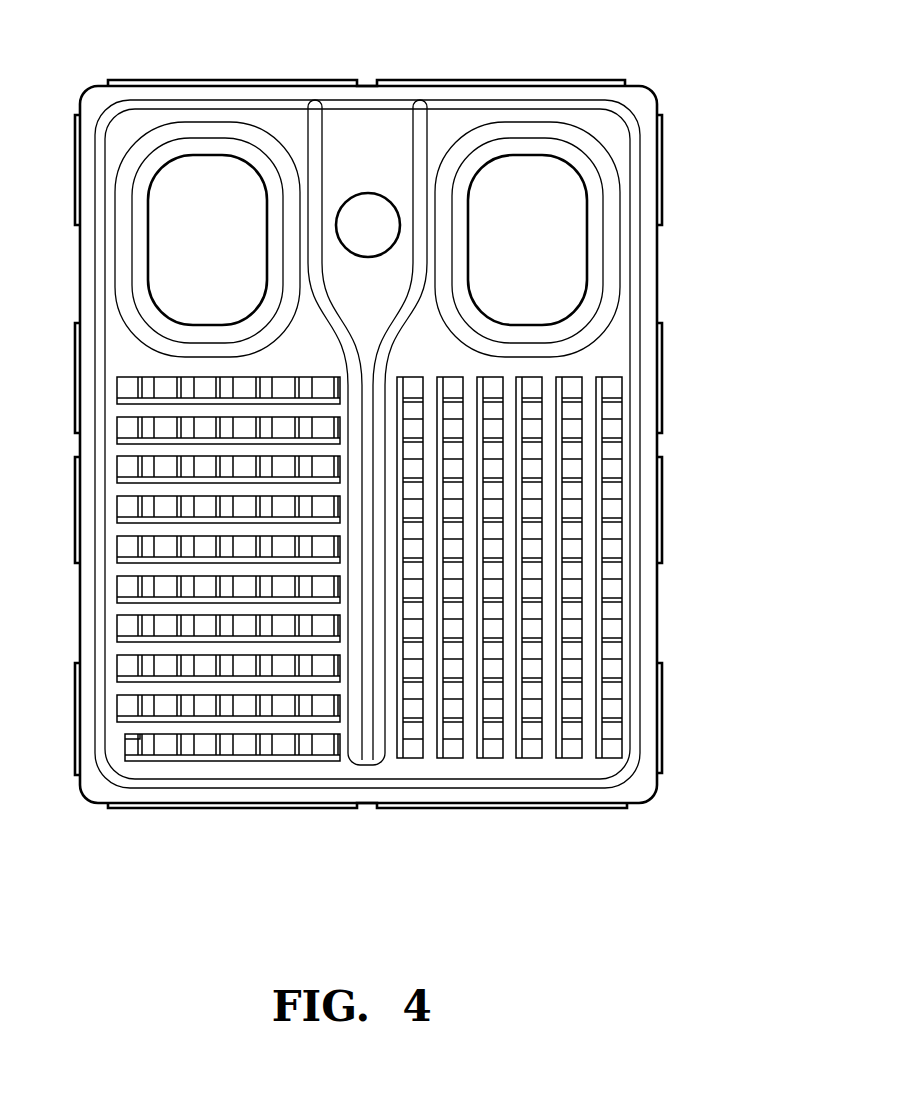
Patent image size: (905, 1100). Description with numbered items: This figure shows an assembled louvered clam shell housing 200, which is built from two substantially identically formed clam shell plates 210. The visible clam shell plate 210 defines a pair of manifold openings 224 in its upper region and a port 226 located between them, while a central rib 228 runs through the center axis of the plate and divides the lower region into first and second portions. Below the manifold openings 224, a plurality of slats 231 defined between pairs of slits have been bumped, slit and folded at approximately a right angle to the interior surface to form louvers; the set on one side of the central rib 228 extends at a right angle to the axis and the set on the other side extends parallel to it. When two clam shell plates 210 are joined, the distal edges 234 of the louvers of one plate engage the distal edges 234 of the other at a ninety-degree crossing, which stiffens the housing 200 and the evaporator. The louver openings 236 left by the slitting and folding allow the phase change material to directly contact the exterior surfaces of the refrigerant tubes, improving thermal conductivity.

The louvered clam shell housing 200 is at (702, 215).
The clam shell plate 210 is at (622, 358).
The manifold opening 224 is at (553, 220).
The port 226 is at (360, 223).
The central rib 228 is at (368, 717).
The slat 231 is at (570, 715).
The distal edge 234 is at (612, 566).
The louver opening 236 is at (608, 583).